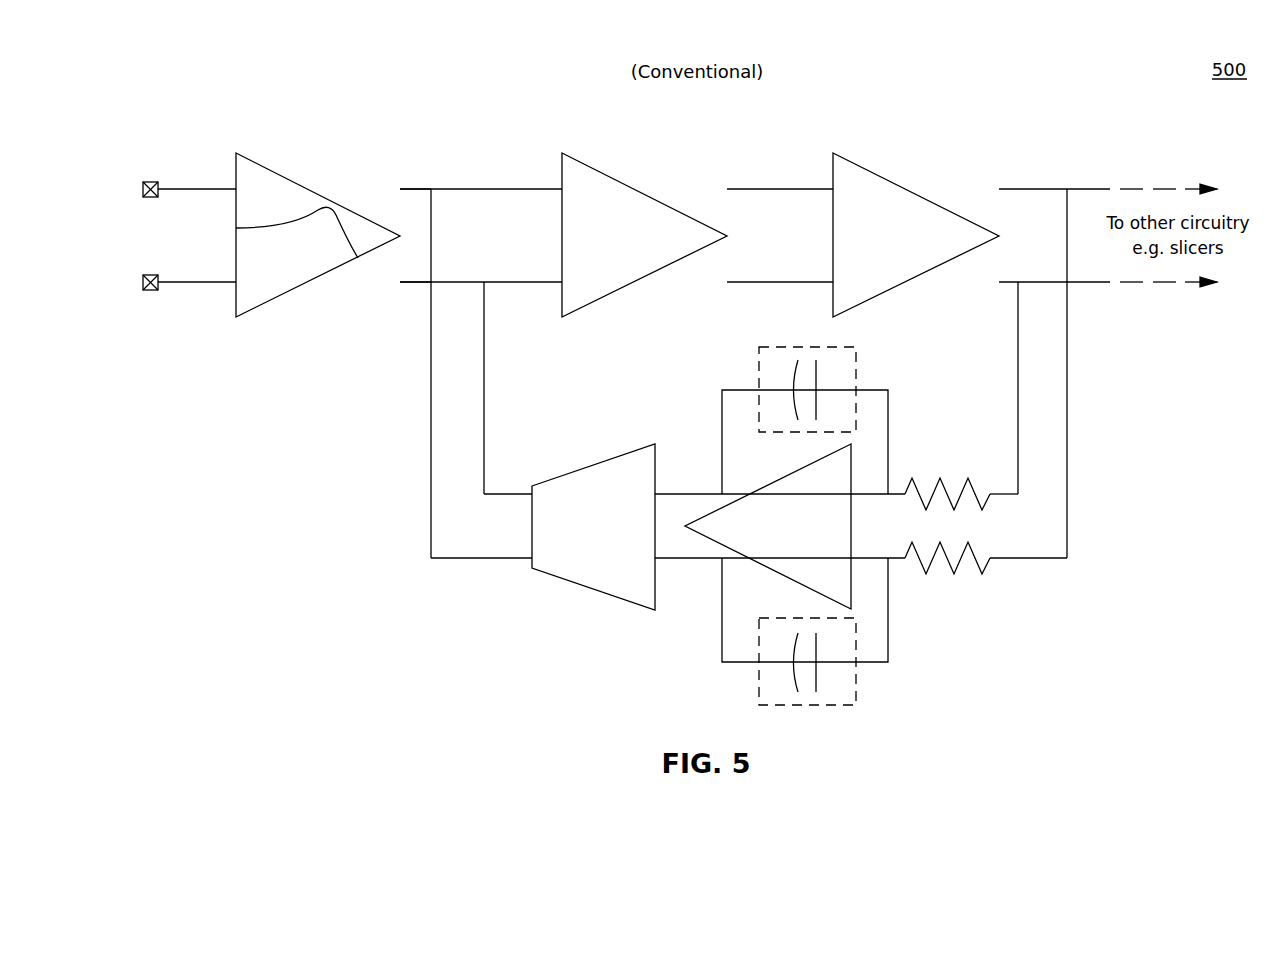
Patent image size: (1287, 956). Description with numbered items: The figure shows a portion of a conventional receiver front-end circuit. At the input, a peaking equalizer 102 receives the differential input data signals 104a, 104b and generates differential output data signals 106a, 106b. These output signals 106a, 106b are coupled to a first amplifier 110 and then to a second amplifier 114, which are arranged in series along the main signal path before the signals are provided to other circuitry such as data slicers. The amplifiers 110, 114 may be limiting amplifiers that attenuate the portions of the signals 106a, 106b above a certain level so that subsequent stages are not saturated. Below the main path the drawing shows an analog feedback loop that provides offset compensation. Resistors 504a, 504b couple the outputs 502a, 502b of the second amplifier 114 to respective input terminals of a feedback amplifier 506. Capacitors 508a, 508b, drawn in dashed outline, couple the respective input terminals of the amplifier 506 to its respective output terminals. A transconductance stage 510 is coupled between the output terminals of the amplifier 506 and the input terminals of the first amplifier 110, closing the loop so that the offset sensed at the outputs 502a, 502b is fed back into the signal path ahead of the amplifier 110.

The peaking equalizer 102 is at (275, 168).
The differential input data signal 104a is at (180, 188).
The differential input data signal 104b is at (180, 282).
The differential output data signal 106a is at (407, 188).
The differential output data signal 106b is at (387, 283).
The amplifier 110 is at (601, 170).
The amplifier 114 is at (880, 172).
The output of amplifier 114 502a is at (1093, 188).
The output of amplifier 114 502b is at (1102, 284).
The resistor 504a is at (943, 578).
The resistor 504b is at (951, 476).
The amplifier 506 is at (852, 537).
The capacitor 508a is at (856, 696).
The capacitor 508b is at (856, 358).
The transconductance stage 510 is at (587, 464).